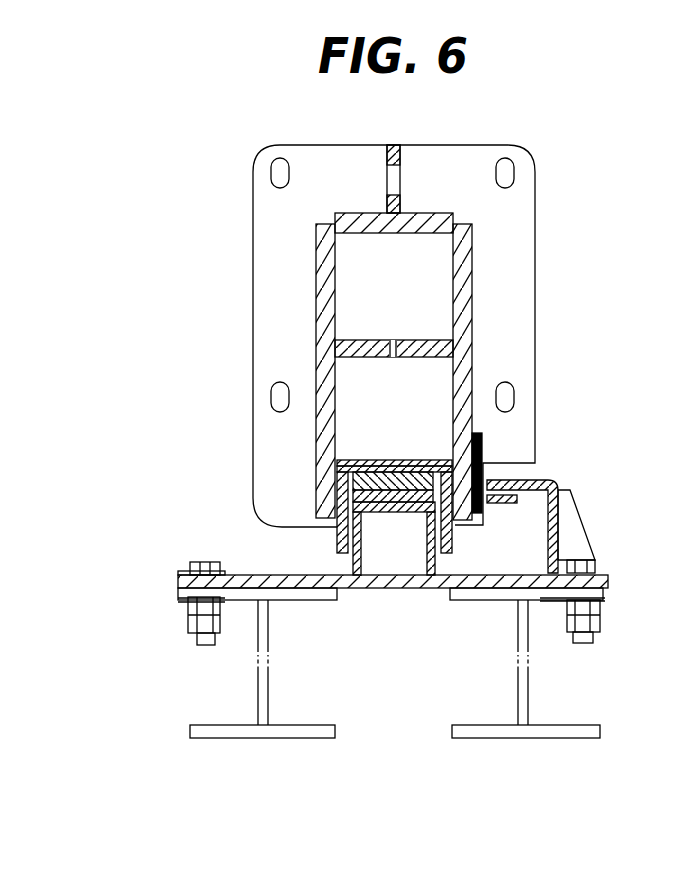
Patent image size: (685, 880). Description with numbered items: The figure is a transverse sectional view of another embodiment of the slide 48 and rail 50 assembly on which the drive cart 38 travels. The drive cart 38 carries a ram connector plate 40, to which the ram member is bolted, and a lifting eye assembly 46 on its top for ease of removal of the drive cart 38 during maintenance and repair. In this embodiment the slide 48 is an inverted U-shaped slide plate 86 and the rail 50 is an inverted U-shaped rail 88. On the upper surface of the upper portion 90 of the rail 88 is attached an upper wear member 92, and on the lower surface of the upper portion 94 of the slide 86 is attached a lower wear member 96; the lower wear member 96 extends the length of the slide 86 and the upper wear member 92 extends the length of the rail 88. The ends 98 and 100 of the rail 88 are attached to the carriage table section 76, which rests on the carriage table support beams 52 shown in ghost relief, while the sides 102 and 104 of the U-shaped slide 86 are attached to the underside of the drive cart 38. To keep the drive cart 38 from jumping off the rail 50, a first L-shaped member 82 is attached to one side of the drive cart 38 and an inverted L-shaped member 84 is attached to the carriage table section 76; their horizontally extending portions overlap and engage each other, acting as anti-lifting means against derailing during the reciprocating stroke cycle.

The drive cart 38 is at (472, 278).
The ram connector plate 40 is at (473, 150).
The lifting eye assembly 46 is at (402, 152).
The slide 48 is at (396, 446).
The rail 50 is at (410, 522).
The carriage table support beams 52 is at (312, 738).
The carriage table section 76 is at (608, 576).
The first L-shaped member 82 is at (483, 447).
The inverted L-shaped member 84 is at (558, 481).
The inverted U-shaped slide plate 86 is at (397, 462).
The inverted U-shaped rail 88 is at (397, 513).
The upper portion of the rail 90 is at (378, 513).
The upper wear member 92 is at (355, 495).
The upper portion of the slide 94 is at (362, 457).
The lower wear member 96 is at (355, 478).
The end of the rail 98 is at (353, 580).
The end of the rail 100 is at (437, 580).
The side of the slide 102 is at (337, 545).
The side of the slide 104 is at (452, 543).